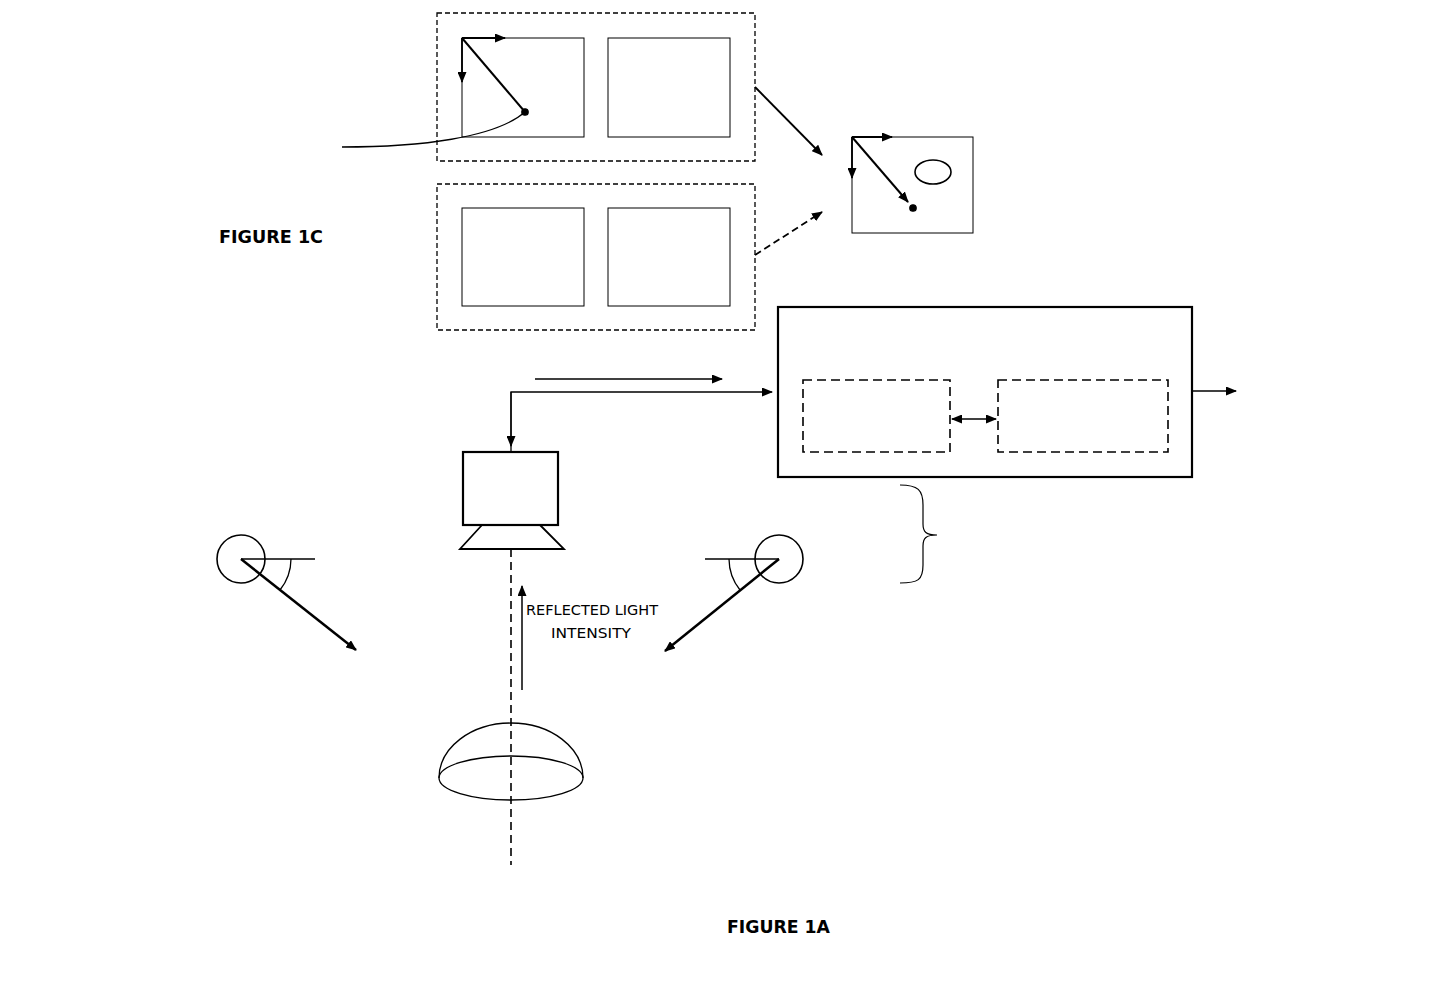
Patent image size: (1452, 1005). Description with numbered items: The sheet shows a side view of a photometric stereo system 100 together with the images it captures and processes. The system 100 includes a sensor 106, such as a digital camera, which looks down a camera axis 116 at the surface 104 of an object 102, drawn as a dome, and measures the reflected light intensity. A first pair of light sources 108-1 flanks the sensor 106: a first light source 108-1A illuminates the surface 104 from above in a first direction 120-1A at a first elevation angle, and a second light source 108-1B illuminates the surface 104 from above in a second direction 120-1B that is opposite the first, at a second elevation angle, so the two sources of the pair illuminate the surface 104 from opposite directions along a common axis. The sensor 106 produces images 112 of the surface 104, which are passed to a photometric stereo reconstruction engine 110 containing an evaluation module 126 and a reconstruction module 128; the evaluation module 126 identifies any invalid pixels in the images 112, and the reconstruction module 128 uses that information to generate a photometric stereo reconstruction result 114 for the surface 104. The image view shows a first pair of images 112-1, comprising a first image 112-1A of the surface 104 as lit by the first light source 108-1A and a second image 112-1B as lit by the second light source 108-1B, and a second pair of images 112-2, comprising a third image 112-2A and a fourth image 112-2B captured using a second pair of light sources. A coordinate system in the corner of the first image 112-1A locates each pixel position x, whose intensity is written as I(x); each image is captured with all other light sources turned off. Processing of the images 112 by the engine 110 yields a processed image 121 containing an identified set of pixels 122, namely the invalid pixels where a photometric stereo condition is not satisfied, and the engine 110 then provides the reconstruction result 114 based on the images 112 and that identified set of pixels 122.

In FIG. 1A, the photometric stereo system 100 is at (1243, 82).
In FIG. 1A, the object 102 is at (547, 788).
In FIG. 1A, the surface 104 is at (553, 740).
In FIG. 1A, the sensor 106 is at (512, 500).
In FIG. 1A, the first pair of light sources 108-1 is at (1008, 534).
In FIG. 1A, the first light source 108-1A is at (244, 541).
In FIG. 1A, the second light source 108-1B is at (774, 541).
In FIG. 1A, the photometric stereo reconstruction engine 110 is at (985, 392).
In FIG. 1A, the images 112 is at (641, 405).
In FIG. 1C, the first pair of images 112-1 is at (473, 96).
In FIG. 1C, the first image 112-1A is at (523, 87).
In FIG. 1C, the second image 112-1B is at (669, 87).
In FIG. 1C, the second pair of images 112-2 is at (564, 257).
In FIG. 1C, the third image 112-2A is at (523, 257).
In FIG. 1C, the fourth image 112-2B is at (669, 257).
In FIG. 1A, the photometric stereo reconstruction result 114 is at (1307, 365).
In FIG. 1A, the camera axis 116 is at (511, 817).
In FIG. 1A, the first direction 120-1A is at (250, 618).
In FIG. 1A, the second direction 120-1B is at (791, 618).
In FIG. 1C, the processed image 121 is at (922, 142).
In FIG. 1C, the identified set of pixels 122 is at (935, 168).
In FIG. 1A, the evaluation module 126 is at (876, 416).
In FIG. 1A, the reconstruction module 128 is at (1083, 416).